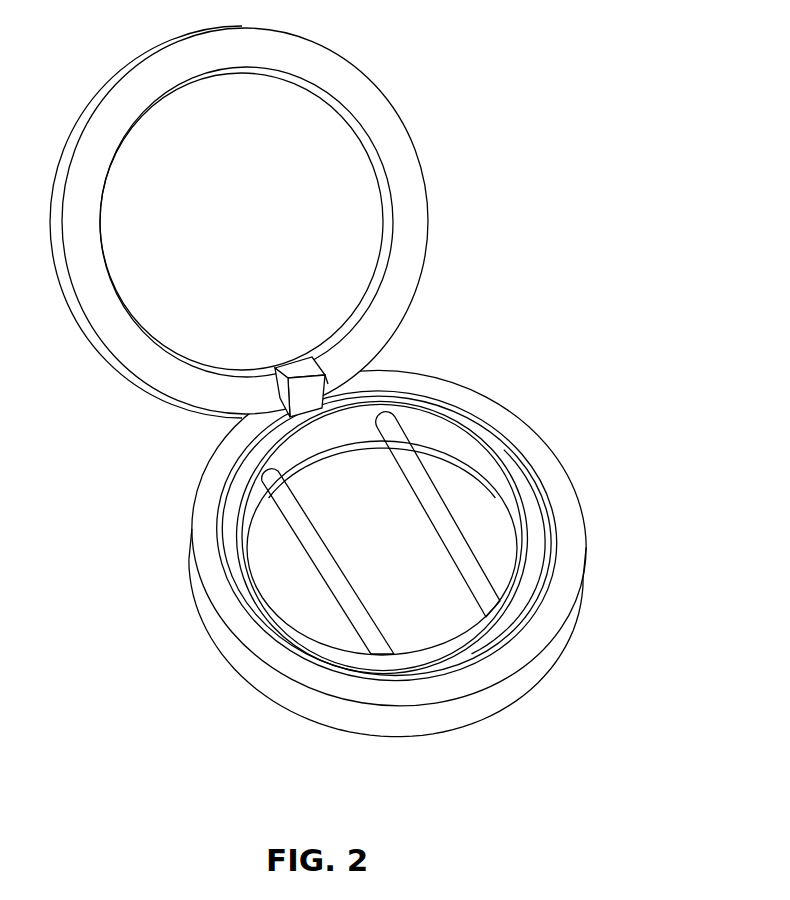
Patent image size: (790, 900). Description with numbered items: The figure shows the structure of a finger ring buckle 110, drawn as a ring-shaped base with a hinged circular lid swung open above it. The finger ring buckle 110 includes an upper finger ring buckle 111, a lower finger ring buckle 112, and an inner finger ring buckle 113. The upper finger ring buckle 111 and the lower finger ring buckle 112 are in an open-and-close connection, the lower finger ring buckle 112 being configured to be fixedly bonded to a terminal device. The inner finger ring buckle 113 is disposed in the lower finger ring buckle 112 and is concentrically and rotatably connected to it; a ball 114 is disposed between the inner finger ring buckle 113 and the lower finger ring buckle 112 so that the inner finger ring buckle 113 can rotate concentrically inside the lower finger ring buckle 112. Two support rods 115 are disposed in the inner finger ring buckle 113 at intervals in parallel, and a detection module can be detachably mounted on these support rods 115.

The finger ring buckle 110 is at (333, 376).
The upper finger ring buckle 111 is at (382, 108).
The lower finger ring buckle 112 is at (518, 438).
The inner finger ring buckle 113 is at (522, 487).
The ball 114 is at (547, 573).
The support rod 115 is at (408, 460).